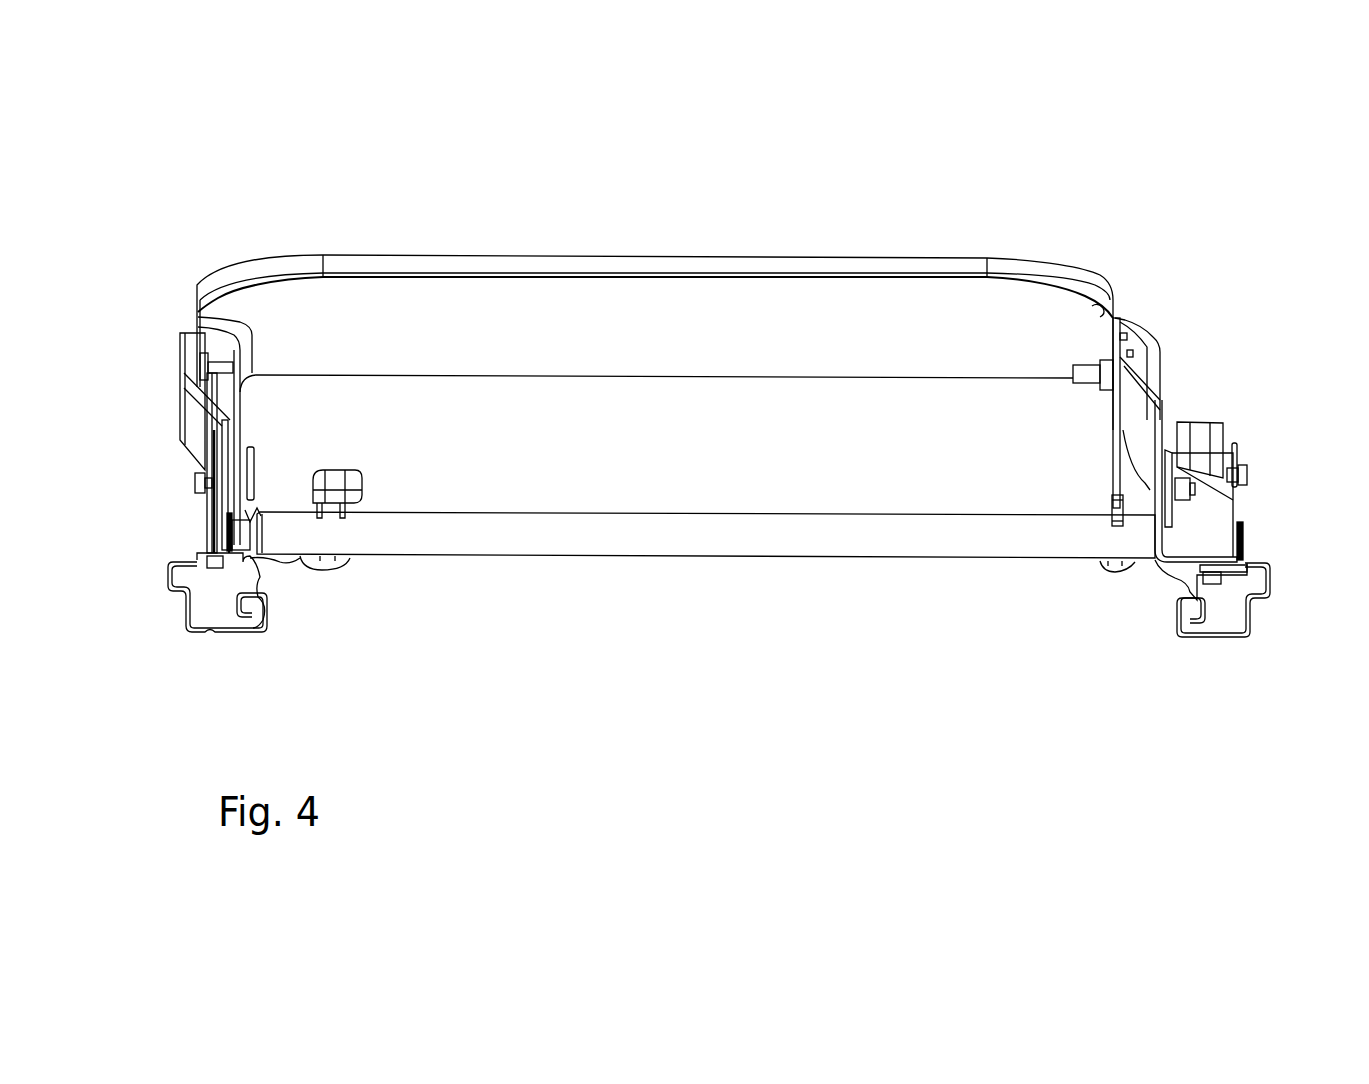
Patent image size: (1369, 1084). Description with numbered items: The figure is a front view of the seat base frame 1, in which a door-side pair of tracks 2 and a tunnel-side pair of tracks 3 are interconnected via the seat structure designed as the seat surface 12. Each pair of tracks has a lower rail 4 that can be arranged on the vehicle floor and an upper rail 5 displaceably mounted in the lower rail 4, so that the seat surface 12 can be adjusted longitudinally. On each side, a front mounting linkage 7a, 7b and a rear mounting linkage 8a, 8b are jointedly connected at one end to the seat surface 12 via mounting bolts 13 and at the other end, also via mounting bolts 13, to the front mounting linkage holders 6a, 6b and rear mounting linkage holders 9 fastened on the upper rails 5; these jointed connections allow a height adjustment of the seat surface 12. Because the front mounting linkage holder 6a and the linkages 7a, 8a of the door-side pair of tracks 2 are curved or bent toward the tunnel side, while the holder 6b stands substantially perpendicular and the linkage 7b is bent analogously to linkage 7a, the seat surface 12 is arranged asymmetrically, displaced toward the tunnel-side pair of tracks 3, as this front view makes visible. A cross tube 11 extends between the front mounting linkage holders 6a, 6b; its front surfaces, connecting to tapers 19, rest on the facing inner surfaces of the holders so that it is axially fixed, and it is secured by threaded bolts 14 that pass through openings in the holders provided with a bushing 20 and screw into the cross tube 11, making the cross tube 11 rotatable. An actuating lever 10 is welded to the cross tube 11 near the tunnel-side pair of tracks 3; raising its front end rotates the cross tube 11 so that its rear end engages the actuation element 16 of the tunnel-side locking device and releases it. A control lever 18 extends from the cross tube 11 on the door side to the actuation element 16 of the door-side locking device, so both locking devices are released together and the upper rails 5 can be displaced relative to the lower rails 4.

The seat base frame 1 is at (660, 719).
The door-side pair of tracks 2 is at (1288, 556).
The tunnel-side pair of tracks 3 is at (137, 634).
The lower rail 4 is at (200, 632).
The upper rail 5 is at (200, 554).
The front mounting linkage holder 6a is at (1168, 520).
The front mounting linkage holder 6b is at (220, 505).
The front mounting linkage 7a is at (1127, 415).
The front mounting linkage 7b is at (195, 412).
The rear mounting linkage 8a is at (1190, 440).
The rear mounting linkage 8b is at (230, 420).
The rear mounting linkage holder 9 is at (237, 505).
The actuating lever 10 is at (335, 485).
The cross tube 11 is at (520, 540).
The seat surface 12 is at (657, 320).
The mounting bolt 13 is at (250, 460).
The threaded bolt 14 is at (213, 531).
The actuation element 16 is at (332, 572).
The control lever 18 is at (1115, 512).
The taper 19 is at (252, 513).
The bushing 20 is at (228, 540).